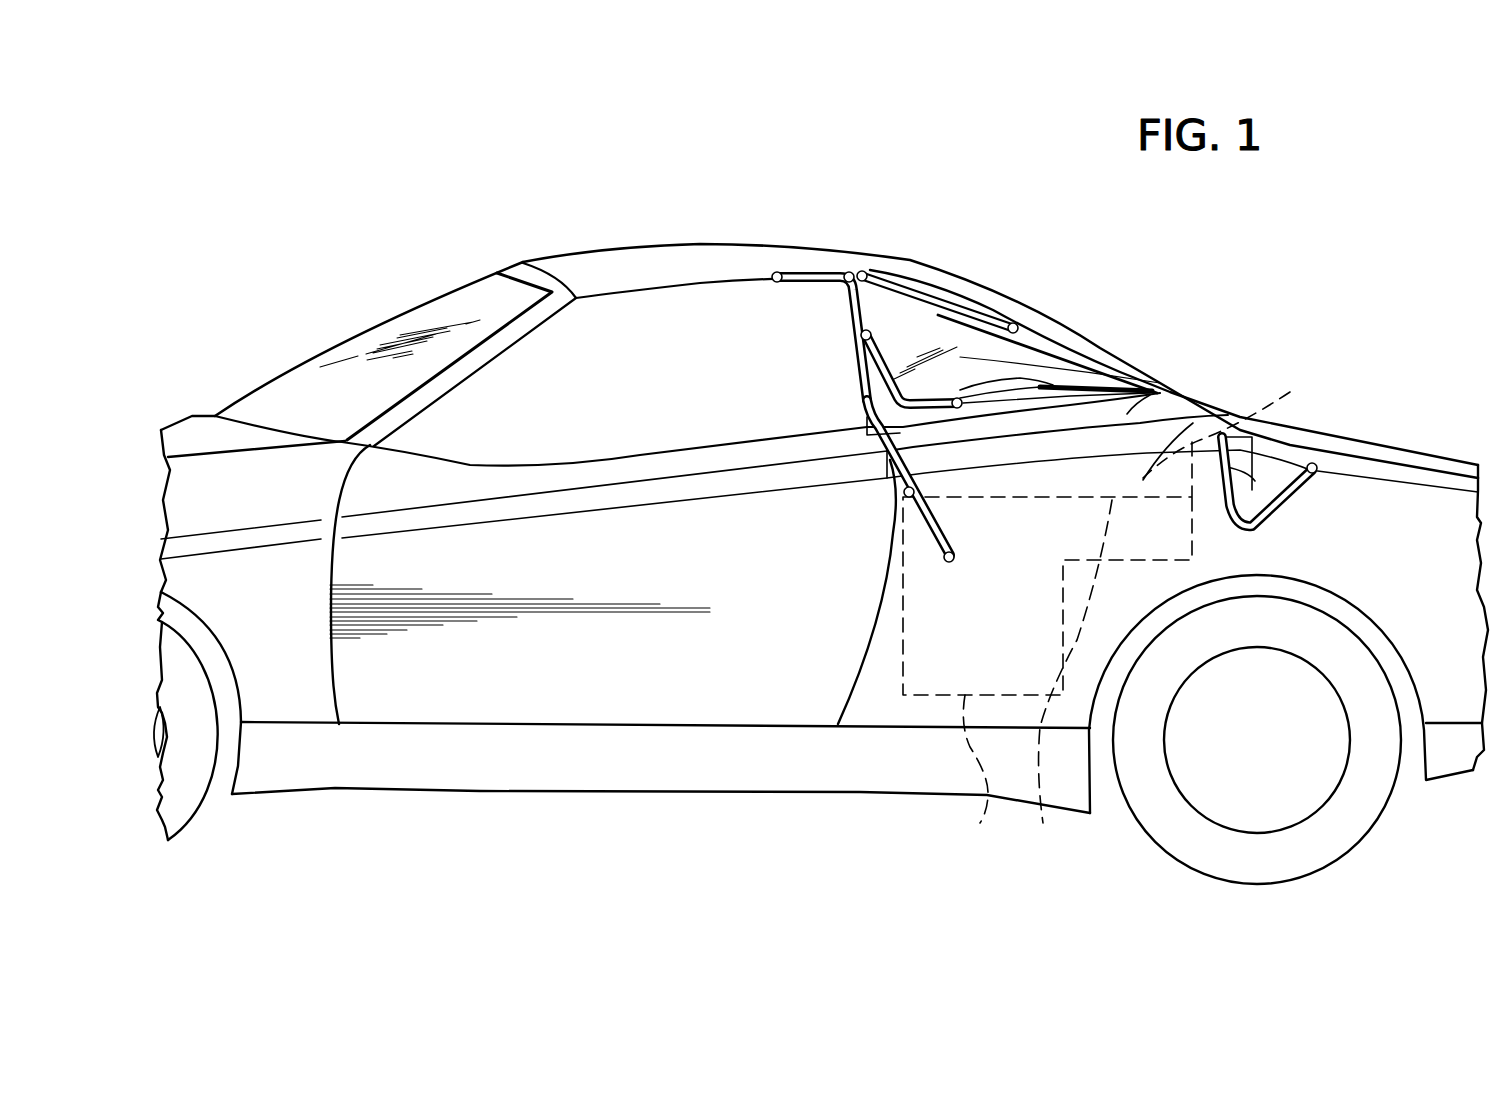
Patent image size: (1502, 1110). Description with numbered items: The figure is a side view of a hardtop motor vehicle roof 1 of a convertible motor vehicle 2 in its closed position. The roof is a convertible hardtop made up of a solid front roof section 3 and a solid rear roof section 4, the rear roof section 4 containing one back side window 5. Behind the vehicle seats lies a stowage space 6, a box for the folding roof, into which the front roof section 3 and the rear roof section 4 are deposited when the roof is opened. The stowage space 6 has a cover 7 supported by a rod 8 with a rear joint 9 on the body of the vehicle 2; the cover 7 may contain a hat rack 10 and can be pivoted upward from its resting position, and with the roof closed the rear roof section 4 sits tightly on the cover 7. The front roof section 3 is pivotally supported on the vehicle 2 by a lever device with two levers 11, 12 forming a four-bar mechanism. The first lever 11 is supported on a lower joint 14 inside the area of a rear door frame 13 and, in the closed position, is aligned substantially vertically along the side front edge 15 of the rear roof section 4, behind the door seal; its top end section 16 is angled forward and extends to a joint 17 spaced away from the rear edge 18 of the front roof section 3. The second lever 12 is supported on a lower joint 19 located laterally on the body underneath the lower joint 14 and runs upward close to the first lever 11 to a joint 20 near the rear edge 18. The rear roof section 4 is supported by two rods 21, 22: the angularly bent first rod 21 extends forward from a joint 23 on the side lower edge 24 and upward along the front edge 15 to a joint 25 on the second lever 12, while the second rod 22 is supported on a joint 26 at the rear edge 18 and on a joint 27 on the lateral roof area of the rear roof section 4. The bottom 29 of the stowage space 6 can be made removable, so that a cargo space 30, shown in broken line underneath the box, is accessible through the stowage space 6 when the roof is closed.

The motor vehicle roof 1 is at (683, 240).
The motor vehicle 2 is at (446, 196).
The front roof section 3 is at (622, 265).
The rear roof section 4 is at (1063, 314).
The back side window 5 is at (1058, 355).
The stowage space 6 is at (1232, 470).
The cover 7 is at (1180, 392).
The rod 8 is at (1302, 465).
The rear joint 9 is at (1342, 458).
The hat rack 10 is at (1068, 377).
The first lever 11 is at (856, 357).
The second lever 12 is at (869, 328).
The rear door frame 13 is at (888, 528).
The lower joint 14 is at (903, 494).
The side front edge 15 is at (853, 415).
The top end section 16 is at (800, 272).
The joint 17 is at (776, 271).
The rear edge 18 is at (860, 269).
The lower joint 19 is at (945, 562).
The joint 20 is at (846, 271).
The first rod 21 is at (953, 310).
The second rod 22 is at (1000, 316).
The joint 23 is at (1083, 387).
The side lower edge 24 is at (1087, 393).
The joint 25 is at (888, 365).
The joint 26 is at (868, 312).
The joint 27 is at (1017, 322).
The bottom 29 is at (1069, 681).
The cargo space 30 is at (980, 779).